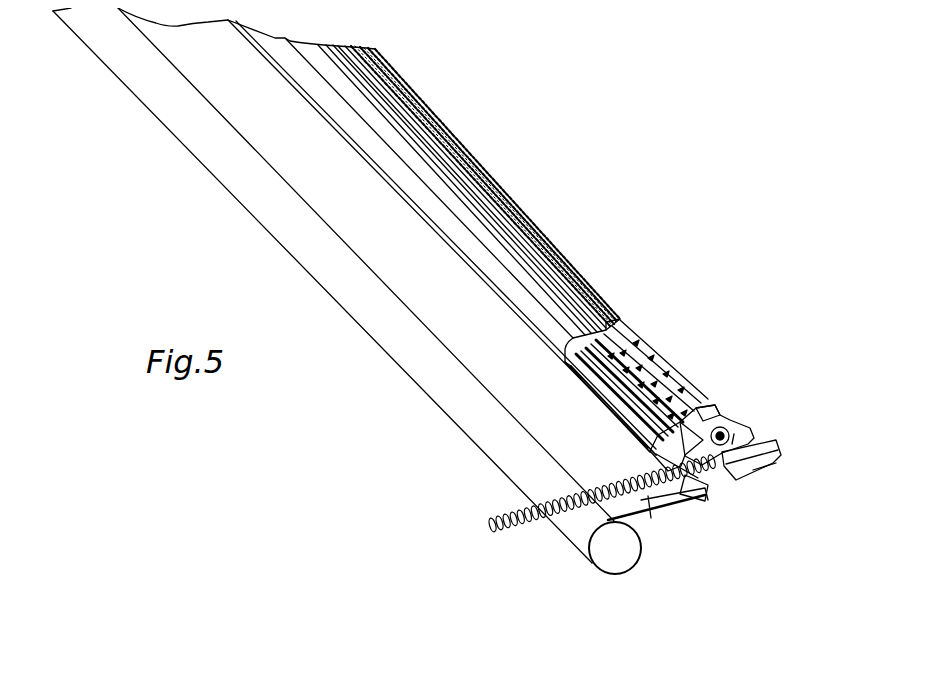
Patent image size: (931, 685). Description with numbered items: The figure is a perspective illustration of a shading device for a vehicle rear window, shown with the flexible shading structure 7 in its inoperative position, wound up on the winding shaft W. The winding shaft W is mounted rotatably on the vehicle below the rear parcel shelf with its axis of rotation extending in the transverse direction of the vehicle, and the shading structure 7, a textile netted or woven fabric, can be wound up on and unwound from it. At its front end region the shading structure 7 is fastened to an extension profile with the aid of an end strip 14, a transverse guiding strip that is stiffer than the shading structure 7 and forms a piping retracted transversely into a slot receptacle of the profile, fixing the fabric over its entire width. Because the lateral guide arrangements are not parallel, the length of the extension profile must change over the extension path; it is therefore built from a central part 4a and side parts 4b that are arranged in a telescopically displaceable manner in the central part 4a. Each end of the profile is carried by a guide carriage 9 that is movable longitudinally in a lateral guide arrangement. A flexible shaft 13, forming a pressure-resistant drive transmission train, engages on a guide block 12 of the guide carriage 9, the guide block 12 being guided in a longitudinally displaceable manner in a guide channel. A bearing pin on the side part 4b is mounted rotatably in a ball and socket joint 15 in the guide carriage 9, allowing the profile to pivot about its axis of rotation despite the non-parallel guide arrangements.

The central part 4a is at (499, 253).
The side part 4b is at (638, 342).
The shading structure 7 is at (531, 400).
The guide carriage 9 is at (757, 478).
The guide block 12 is at (731, 457).
The flexible shaft 13 is at (640, 487).
The end strip 14 is at (703, 488).
The ball and socket joint 15 is at (723, 413).
The winding shaft W is at (606, 556).